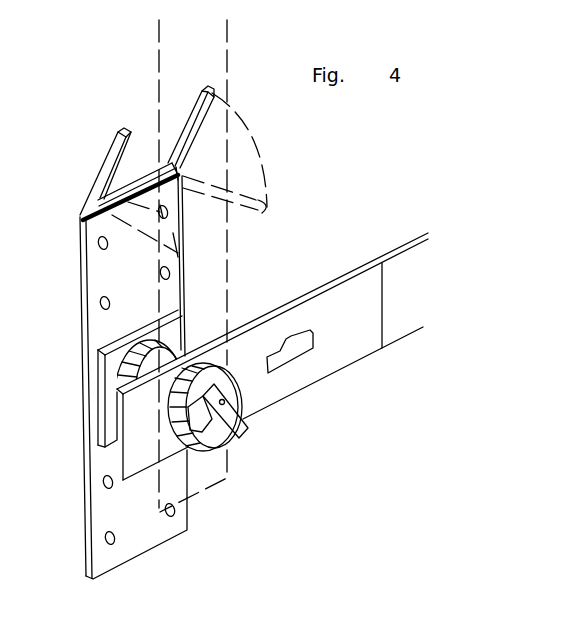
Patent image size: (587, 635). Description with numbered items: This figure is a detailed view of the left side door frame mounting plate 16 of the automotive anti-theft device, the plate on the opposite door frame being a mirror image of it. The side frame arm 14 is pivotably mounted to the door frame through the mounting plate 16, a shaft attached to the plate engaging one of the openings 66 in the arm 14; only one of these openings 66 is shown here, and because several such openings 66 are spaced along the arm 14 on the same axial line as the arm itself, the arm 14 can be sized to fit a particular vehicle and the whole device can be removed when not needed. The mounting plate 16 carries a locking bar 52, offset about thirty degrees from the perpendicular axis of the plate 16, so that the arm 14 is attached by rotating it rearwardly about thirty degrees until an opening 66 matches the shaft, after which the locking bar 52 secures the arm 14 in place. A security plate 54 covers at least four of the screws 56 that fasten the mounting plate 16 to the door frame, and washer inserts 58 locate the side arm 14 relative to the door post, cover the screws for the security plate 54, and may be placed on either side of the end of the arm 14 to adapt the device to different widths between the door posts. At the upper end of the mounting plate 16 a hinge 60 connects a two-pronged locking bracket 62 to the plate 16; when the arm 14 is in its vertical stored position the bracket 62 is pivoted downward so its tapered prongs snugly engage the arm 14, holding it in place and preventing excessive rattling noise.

The side frame arm 14 is at (413, 272).
The side door frame mounting plate 16 is at (103, 270).
The locking bar 52 is at (242, 437).
The security plate 54 is at (110, 362).
The screws 56 is at (103, 480).
The washer inserts 58 is at (123, 375).
The hinge 60 is at (82, 218).
The two-pronged locking bracket 62 is at (110, 157).
The openings 66 is at (288, 353).